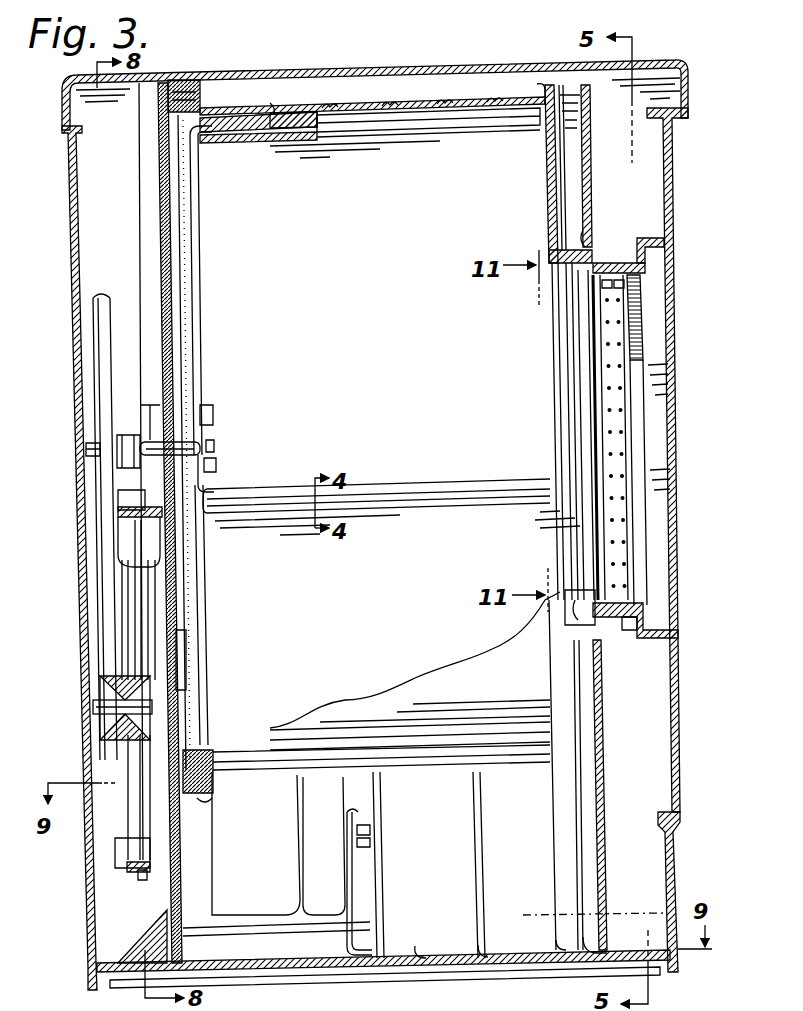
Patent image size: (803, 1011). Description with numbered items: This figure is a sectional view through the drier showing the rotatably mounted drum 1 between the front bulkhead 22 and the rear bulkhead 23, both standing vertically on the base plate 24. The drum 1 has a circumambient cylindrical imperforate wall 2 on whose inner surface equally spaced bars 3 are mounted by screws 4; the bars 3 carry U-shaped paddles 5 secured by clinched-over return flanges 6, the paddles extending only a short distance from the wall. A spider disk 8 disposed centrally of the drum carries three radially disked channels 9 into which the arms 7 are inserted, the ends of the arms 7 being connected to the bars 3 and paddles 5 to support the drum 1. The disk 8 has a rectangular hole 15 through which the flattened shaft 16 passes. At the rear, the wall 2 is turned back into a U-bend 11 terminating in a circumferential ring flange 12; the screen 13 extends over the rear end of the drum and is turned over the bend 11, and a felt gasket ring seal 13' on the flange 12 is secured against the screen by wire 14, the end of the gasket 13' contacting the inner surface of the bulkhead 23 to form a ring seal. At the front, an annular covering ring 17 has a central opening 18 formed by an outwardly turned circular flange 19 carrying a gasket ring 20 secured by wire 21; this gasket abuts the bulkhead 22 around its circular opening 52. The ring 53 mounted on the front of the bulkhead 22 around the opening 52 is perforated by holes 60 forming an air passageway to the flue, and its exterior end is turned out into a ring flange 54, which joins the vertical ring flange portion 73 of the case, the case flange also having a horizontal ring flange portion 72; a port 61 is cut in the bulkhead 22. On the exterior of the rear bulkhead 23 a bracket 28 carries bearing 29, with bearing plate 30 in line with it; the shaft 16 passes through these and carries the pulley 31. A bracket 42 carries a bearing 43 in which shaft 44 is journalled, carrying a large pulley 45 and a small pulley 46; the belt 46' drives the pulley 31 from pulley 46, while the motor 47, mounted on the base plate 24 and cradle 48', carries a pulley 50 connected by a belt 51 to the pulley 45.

The drum 1 is at (368, 250).
The cylindrical imperforate wall 2 is at (362, 106).
The bars 3 is at (312, 92).
The screws 4 is at (274, 102).
The U-shaped paddles 5 is at (366, 133).
The clinched-over return flanges 6 is at (424, 488).
The arms 7 is at (196, 213).
The spider disk 8 is at (207, 424).
The radially disked channels 9 is at (208, 407).
The U-bend 11 is at (203, 112).
The circumferential ring flange 12 is at (192, 78).
The screen 13 is at (220, 165).
The felt gasket ring seal 13' is at (220, 404).
The wire 14 is at (182, 83).
The rectangular hole 15 is at (214, 460).
The shaft 16 is at (204, 443).
The annular covering ring 17 is at (545, 190).
The central opening 18 is at (570, 400).
The circular flange 19 is at (550, 307).
The gasket ring 20 is at (594, 232).
The wire 21 is at (550, 234).
The front bulkhead 22 is at (591, 190).
The rear bulkhead 23 is at (163, 227).
The base plate 24 is at (427, 932).
The bracket 28 is at (117, 511).
The bearing 29 is at (128, 435).
The bearing plate 30 is at (162, 417).
The pulley 31 is at (93, 407).
The bracket 42 is at (183, 662).
The bearing 43 is at (150, 727).
The shaft 44 is at (97, 702).
The large pulley 45 is at (150, 623).
The small pulley 46 is at (91, 716).
The belt 46' is at (82, 620).
The motor 47 is at (275, 834).
The cradle 48' is at (384, 882).
The pulley 50 is at (130, 863).
The belt 51 is at (140, 878).
The circular opening 52 is at (593, 342).
The ring 53 is at (623, 619).
The ring flange 54 is at (640, 248).
The holes 60 is at (610, 510).
The port 61 is at (428, 806).
The horizontal ring flange portion 72 is at (668, 225).
The vertical ring flange portion 73 is at (667, 255).